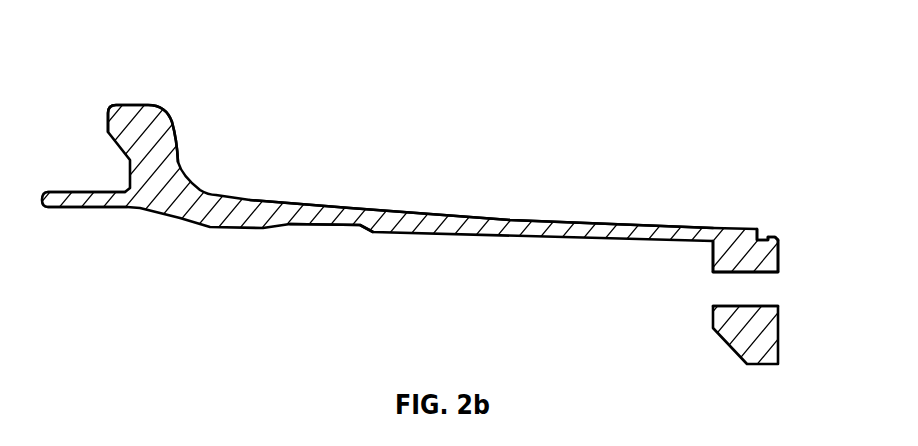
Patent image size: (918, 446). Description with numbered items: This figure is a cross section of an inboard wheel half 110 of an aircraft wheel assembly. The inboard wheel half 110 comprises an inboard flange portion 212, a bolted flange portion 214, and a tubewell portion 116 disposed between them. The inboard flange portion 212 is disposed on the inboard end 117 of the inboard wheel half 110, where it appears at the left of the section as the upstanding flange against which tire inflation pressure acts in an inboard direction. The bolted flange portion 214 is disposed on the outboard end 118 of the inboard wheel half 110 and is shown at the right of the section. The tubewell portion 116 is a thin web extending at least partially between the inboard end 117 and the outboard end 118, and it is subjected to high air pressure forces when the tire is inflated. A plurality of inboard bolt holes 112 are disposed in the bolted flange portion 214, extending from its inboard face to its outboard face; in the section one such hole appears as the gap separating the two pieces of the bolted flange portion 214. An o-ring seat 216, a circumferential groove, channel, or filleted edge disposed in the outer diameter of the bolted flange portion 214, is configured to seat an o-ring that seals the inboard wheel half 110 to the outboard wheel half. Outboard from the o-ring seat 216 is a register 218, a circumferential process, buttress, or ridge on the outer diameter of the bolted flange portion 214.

The inboard wheel half 110 is at (261, 98).
The inboard bolt holes 112 is at (686, 289).
The tubewell portion 116 is at (420, 232).
The inboard end 117 is at (213, 253).
The outboard end 118 is at (803, 138).
The inboard flange portion 212 is at (125, 105).
The bolted flange portion 214 is at (737, 337).
The o-ring seat 216 is at (757, 238).
The register 218 is at (780, 238).